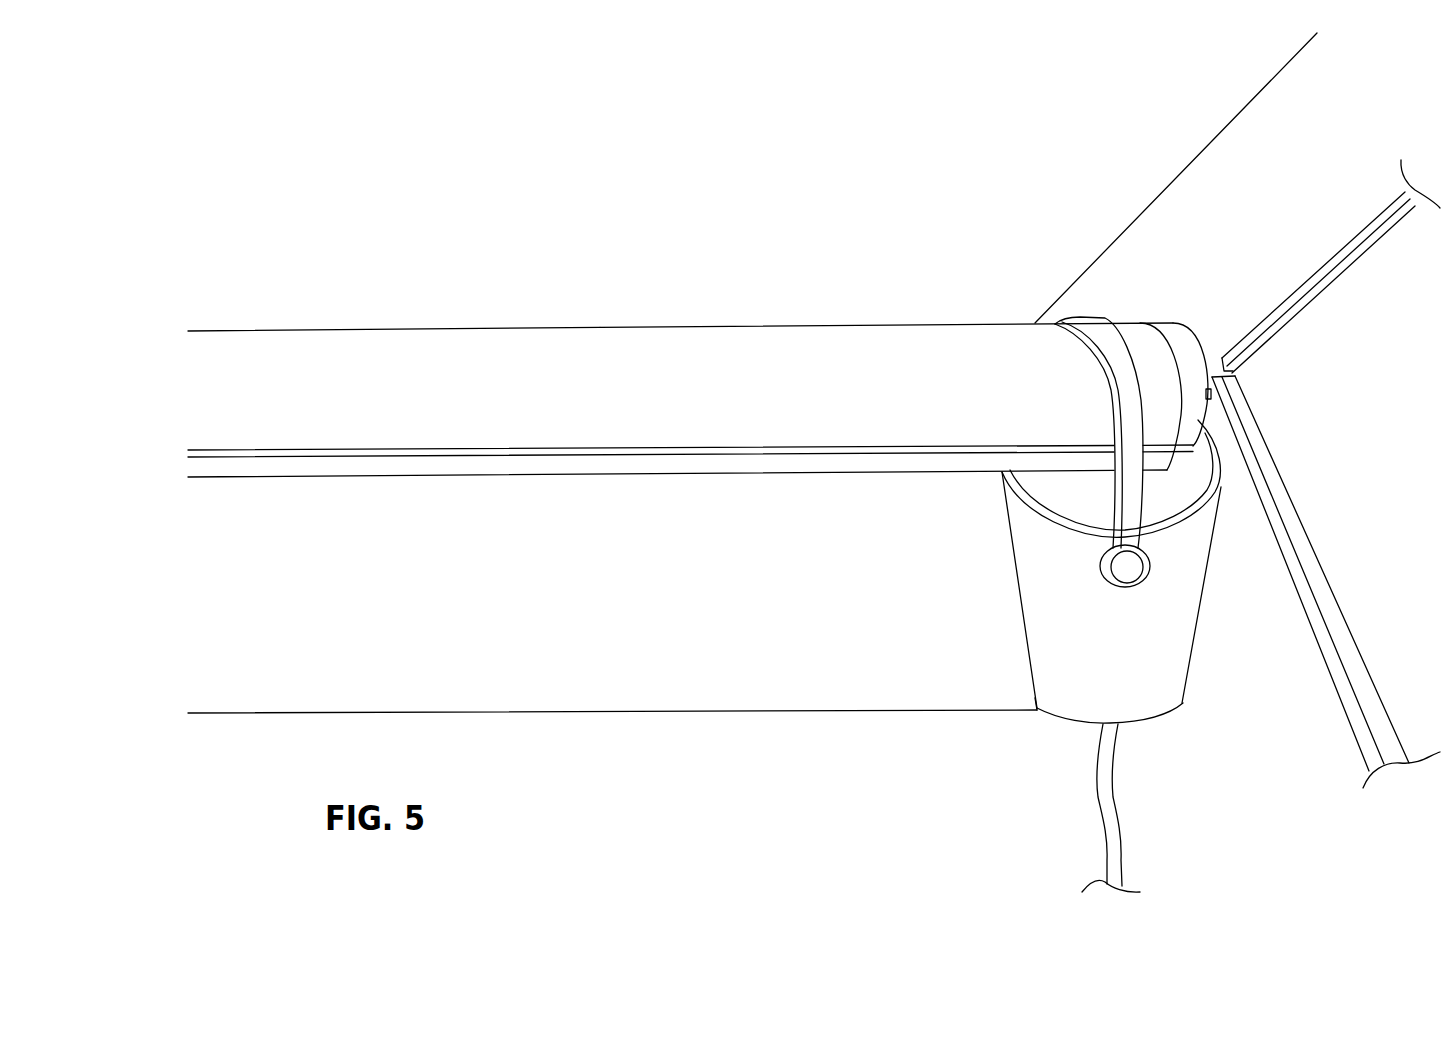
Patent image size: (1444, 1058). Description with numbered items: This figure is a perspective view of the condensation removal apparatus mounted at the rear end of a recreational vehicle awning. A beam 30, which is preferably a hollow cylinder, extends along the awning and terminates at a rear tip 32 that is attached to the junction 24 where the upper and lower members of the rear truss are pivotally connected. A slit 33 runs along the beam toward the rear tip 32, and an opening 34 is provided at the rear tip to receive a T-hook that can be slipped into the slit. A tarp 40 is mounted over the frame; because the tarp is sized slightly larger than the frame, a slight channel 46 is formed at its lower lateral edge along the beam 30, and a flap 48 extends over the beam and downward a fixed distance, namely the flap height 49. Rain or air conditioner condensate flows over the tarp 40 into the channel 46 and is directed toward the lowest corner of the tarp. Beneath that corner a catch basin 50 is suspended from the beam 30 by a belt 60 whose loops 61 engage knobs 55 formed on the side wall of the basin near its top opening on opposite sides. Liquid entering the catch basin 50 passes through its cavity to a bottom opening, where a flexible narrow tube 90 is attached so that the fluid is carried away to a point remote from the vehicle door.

The junction 24 is at (1247, 376).
The beam 30 is at (268, 348).
The rear tip 32 is at (1172, 336).
The slit 33 is at (577, 449).
The opening 34 is at (1184, 443).
The tarp 40 is at (539, 174).
The channel 46 is at (657, 320).
The flap 48 is at (598, 672).
The flap height 49 is at (319, 478).
The catch basin 50 is at (1058, 736).
The knobs 55 is at (1142, 582).
The belt 60 is at (1110, 343).
The loops 61 is at (1130, 573).
The flexible narrow tube 90 is at (1118, 847).